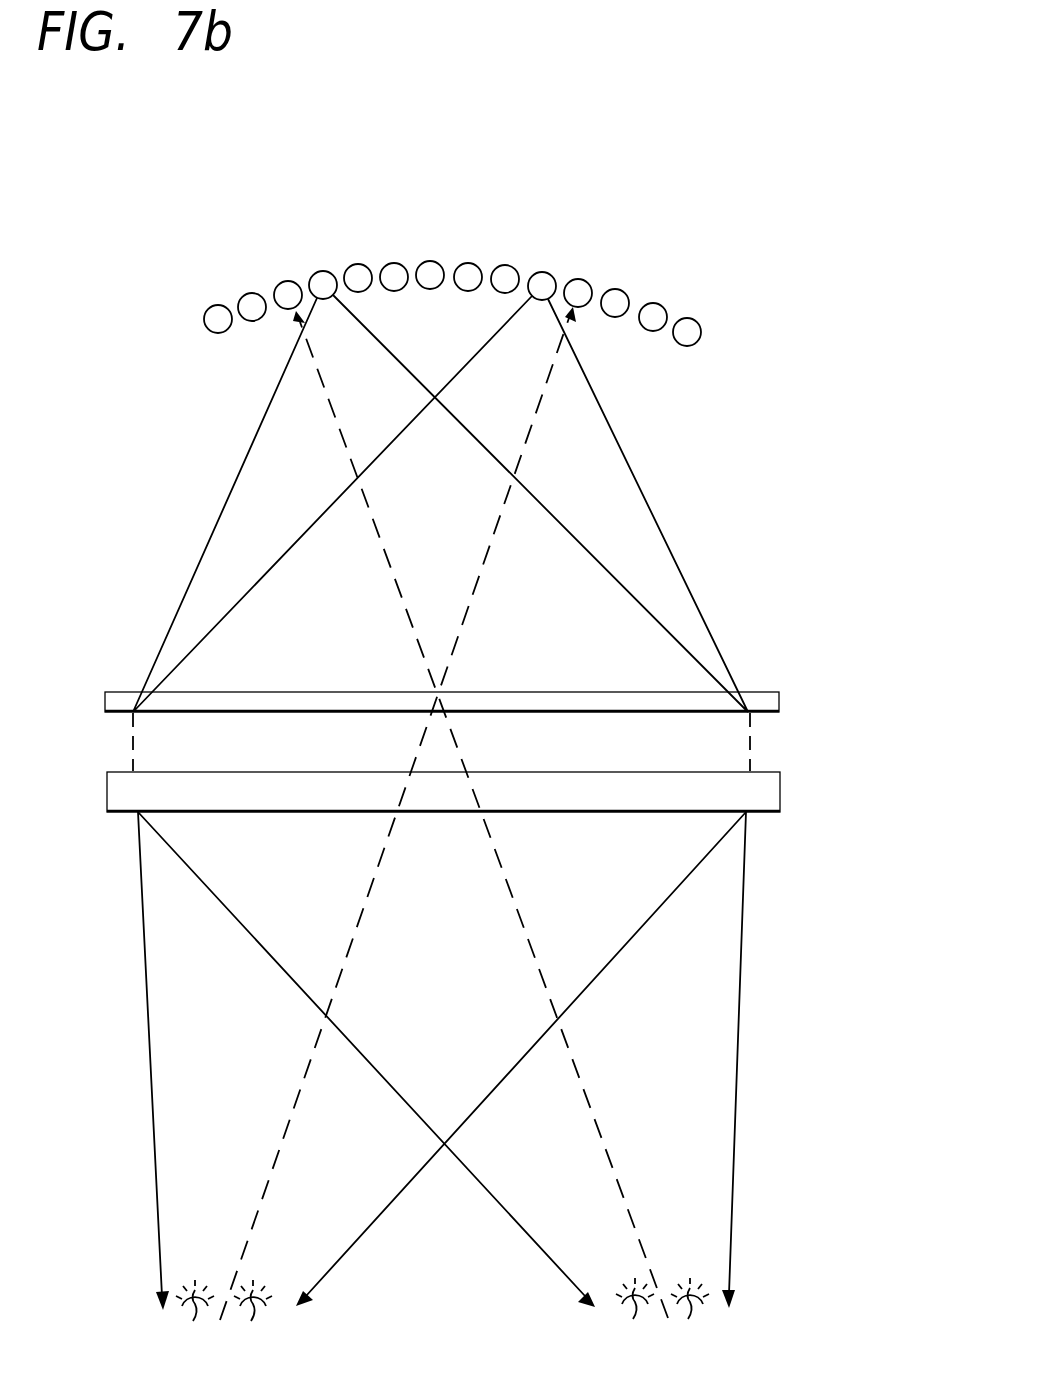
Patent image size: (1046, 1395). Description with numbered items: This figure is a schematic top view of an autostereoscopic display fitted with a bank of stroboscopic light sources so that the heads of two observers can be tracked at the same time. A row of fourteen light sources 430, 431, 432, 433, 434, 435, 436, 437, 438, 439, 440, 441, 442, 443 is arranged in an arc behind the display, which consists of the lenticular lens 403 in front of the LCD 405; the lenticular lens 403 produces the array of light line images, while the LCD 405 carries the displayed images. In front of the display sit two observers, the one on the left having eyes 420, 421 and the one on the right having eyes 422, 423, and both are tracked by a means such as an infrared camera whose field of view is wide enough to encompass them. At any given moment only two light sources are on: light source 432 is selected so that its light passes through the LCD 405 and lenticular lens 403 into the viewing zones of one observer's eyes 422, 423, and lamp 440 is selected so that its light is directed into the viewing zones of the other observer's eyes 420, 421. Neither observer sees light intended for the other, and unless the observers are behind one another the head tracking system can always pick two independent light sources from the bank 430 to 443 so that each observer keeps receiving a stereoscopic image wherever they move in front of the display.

The lenticular lens 403 is at (779, 700).
The LCD 405 is at (780, 795).
The eye of the left observer 420 is at (199, 1317).
The eye of the left observer 421 is at (269, 1317).
The eye of the right observer 422 is at (637, 1314).
The eye of the right observer 423 is at (707, 1314).
The light source 430 is at (204, 321).
The light source 431 is at (243, 297).
The light source 432 is at (278, 285).
The light source 433 is at (318, 271).
The light source 434 is at (355, 265).
The light source 435 is at (393, 263).
The light source 436 is at (430, 262).
The light source 437 is at (467, 263).
The light source 438 is at (503, 265).
The light source 439 is at (540, 272).
The light source 440 is at (575, 279).
The light source 441 is at (612, 289).
The light source 442 is at (653, 303).
The light source 443 is at (697, 322).